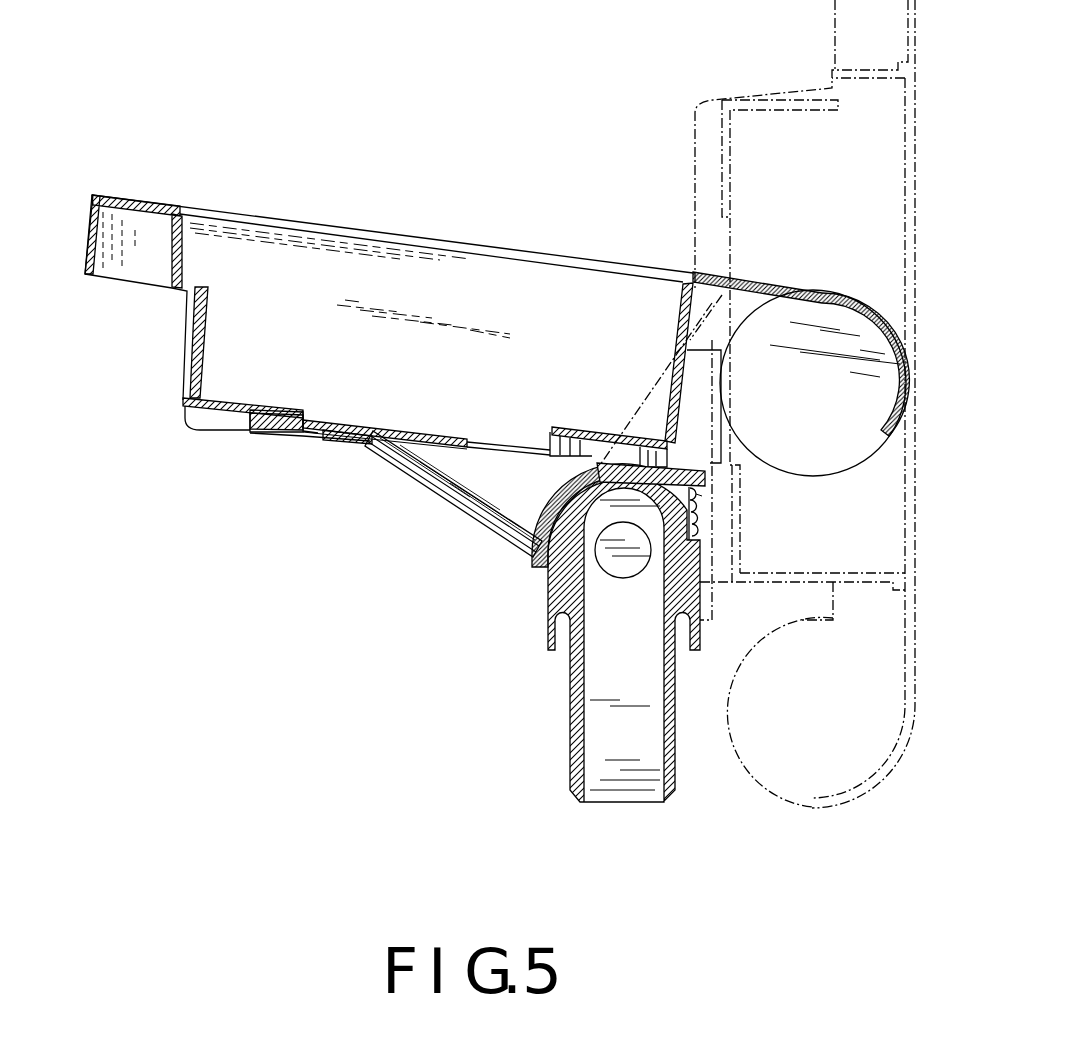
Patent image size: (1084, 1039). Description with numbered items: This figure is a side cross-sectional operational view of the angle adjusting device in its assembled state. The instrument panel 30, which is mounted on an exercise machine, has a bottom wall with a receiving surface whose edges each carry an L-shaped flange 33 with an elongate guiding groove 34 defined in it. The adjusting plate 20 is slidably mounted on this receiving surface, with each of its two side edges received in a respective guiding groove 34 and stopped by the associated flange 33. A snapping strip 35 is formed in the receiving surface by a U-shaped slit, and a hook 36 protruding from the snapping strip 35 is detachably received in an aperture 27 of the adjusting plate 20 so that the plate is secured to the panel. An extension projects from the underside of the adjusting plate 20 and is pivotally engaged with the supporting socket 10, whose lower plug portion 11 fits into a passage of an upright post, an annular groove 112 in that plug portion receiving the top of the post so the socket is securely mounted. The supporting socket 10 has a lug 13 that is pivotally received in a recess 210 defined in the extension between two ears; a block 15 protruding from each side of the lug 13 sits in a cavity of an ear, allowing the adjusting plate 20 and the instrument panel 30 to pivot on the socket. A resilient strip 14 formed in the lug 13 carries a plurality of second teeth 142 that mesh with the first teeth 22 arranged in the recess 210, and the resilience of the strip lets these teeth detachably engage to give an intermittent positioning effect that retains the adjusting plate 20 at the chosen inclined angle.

The supporting socket 10 is at (527, 609).
The lower plug portion 11 is at (578, 717).
The annular groove 112 is at (563, 634).
The lug 13 is at (700, 563).
The resilient strip 14 is at (673, 477).
The second teeth 142 is at (600, 463).
The block 15 is at (623, 578).
The adjusting plate 20 is at (464, 526).
The recess 210 is at (700, 497).
The first teeth 22 is at (537, 548).
The aperture 27 is at (318, 432).
The instrument panel 30 is at (782, 284).
The L-shaped flange 33 is at (263, 435).
The guiding groove 34 is at (367, 440).
The snapping strip 35 is at (222, 398).
The hook 36 is at (300, 431).